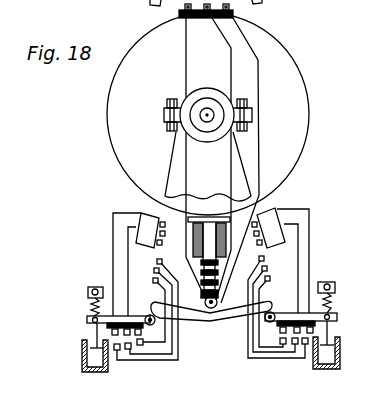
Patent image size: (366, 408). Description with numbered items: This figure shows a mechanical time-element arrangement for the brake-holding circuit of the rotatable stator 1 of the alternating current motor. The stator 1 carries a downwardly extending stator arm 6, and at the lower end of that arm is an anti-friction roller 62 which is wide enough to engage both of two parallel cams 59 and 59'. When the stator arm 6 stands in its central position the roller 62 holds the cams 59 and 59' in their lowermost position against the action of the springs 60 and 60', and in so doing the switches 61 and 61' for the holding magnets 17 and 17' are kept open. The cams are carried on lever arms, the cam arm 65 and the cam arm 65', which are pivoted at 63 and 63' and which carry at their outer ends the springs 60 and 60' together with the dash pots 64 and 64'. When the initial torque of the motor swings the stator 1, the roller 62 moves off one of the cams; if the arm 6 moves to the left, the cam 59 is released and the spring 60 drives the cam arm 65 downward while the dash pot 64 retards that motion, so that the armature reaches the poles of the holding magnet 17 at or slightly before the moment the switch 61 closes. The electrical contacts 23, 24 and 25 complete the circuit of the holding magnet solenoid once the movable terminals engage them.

The stator 1 is at (283, 67).
The stator arm 6 is at (209, 257).
The holding magnet 17 is at (134, 253).
The holding magnet 17' is at (283, 252).
The electrical contact 23 is at (148, 303).
The electrical contact 24 is at (151, 304).
The electrical contact 25 is at (152, 305).
The cam 59 is at (224, 296).
The cam 59' is at (224, 279).
The spring 60 is at (76, 301).
The spring 60' is at (337, 297).
The switch 61 is at (143, 357).
The switch 61' is at (264, 340).
The anti-friction roller 62 is at (211, 309).
The pivot 63 is at (117, 288).
The pivot 63' is at (301, 285).
The dash pot 64 is at (79, 347).
The dash pot 64' is at (335, 344).
The cam arm 65 is at (100, 297).
The cam arm 65' is at (308, 297).